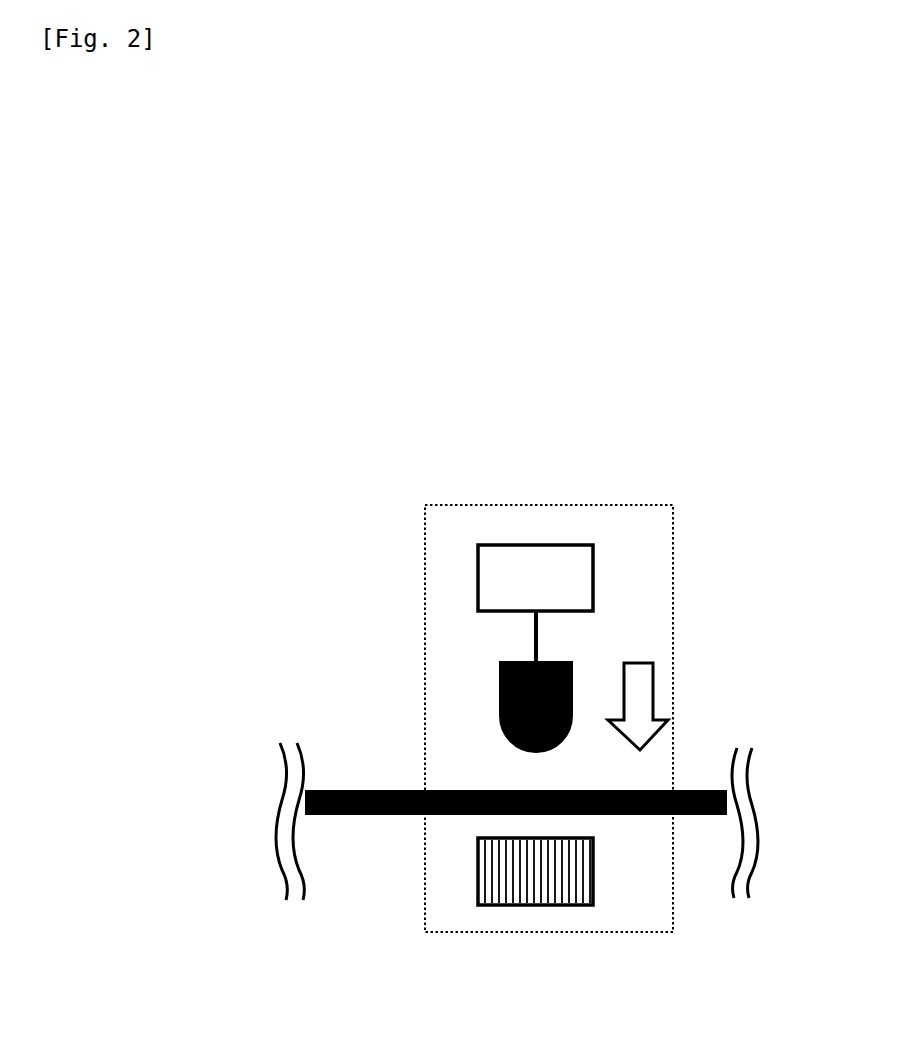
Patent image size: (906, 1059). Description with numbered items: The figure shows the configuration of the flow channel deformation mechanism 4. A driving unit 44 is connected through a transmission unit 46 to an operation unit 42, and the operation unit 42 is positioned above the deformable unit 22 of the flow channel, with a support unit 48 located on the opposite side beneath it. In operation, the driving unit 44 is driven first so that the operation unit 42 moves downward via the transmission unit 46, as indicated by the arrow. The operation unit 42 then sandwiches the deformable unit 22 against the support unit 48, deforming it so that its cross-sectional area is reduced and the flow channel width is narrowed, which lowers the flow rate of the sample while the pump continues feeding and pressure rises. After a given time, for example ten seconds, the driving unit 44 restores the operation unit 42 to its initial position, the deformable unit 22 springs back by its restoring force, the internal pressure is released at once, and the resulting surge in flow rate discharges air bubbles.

The flow channel deformation mechanism 4 is at (570, 505).
The driving unit 44 is at (477, 572).
The transmission unit 46 is at (538, 633).
The operation unit 42 is at (500, 693).
The deformable unit 22 is at (467, 816).
The support unit 48 is at (537, 905).